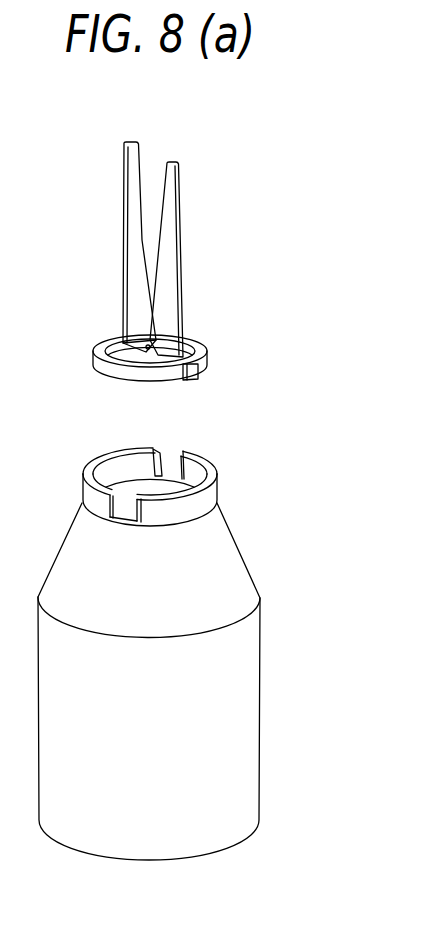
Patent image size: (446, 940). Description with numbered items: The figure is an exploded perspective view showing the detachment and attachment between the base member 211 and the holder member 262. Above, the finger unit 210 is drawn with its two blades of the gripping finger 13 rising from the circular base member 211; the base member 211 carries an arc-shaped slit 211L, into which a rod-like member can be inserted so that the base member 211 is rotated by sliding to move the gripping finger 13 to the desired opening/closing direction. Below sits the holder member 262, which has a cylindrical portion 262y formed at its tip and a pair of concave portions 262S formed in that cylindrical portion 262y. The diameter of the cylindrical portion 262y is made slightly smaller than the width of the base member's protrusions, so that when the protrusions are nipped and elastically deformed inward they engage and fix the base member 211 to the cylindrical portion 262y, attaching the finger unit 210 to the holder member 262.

The gripping finger 13 is at (122, 218).
The finger unit 210 is at (160, 249).
The base member 211 is at (191, 334).
The arc-shaped slit 211L is at (193, 340).
The holder member 262 is at (193, 634).
The concave portion 262S is at (177, 458).
The cylindrical portion 262y is at (196, 467).